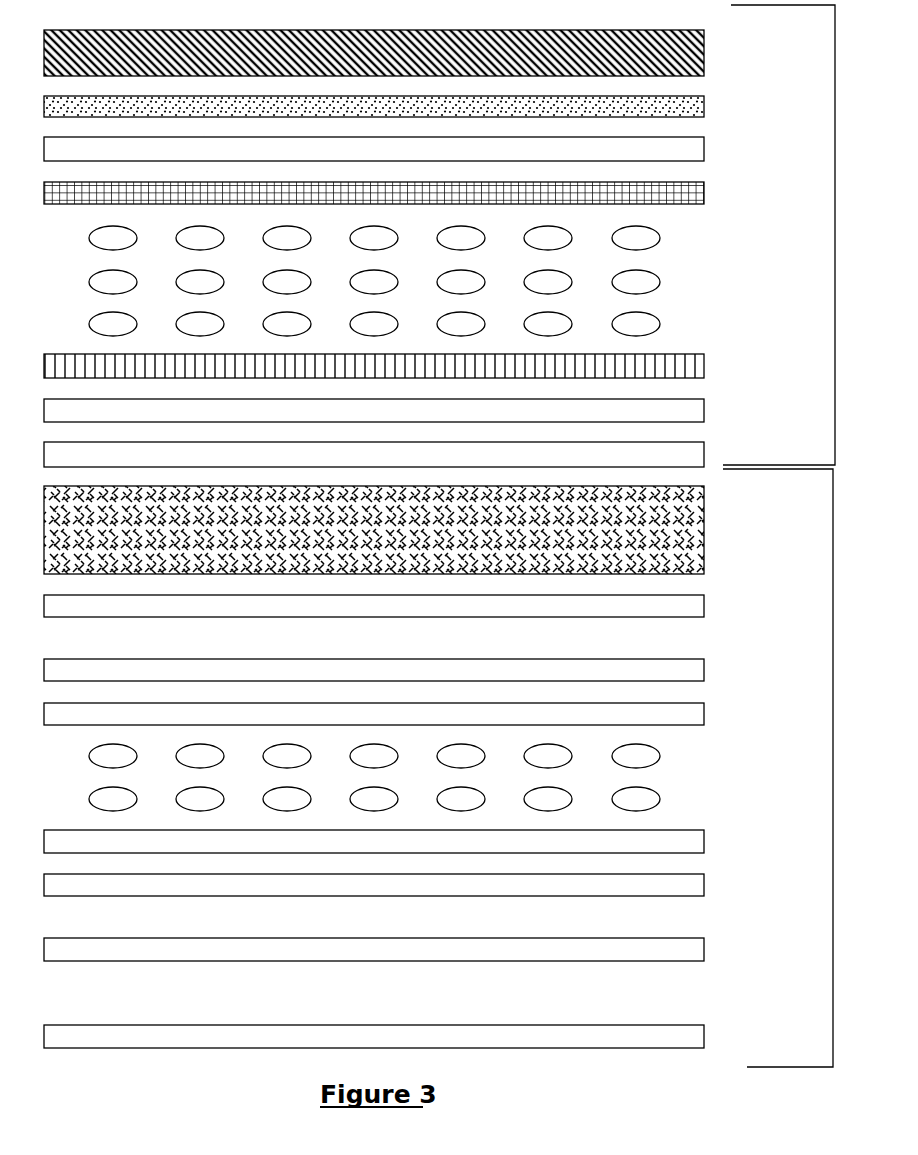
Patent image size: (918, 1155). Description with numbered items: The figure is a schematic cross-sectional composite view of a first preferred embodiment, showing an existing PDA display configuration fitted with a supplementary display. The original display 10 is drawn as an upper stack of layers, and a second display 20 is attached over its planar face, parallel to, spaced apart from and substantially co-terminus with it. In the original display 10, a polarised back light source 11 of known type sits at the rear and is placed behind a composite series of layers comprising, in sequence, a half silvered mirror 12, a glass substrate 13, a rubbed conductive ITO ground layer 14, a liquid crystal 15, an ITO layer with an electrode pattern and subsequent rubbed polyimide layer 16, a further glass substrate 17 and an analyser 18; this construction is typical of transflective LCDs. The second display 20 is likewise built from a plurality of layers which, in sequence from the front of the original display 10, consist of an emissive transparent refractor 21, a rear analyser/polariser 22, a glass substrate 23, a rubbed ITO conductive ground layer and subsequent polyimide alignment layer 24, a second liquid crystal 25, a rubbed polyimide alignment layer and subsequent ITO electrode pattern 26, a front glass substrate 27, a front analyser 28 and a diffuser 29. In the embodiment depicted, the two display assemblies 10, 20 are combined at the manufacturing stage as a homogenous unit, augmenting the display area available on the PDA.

The original display 10 is at (800, 235).
The polarised back light source 11 is at (424, 46).
The half silvered mirror 12 is at (416, 99).
The glass substrate 13 is at (420, 138).
The rubbed conductive ITO ground layer 14 is at (425, 186).
The liquid crystal 15 is at (449, 281).
The ITO layer with electrode pattern and rubbed polyimide layer 16 is at (420, 342).
The glass substrate 17 is at (426, 392).
The analyser 18 is at (426, 437).
The second display 20 is at (799, 768).
The emissive transparent refractor 21 is at (425, 523).
The rear analyser/polariser 22 is at (425, 588).
The glass substrate 23 is at (426, 663).
The rubbed ITO conductive ground layer and polyimide alignment layer 24 is at (422, 707).
The second liquid crystal 25 is at (427, 775).
The rubbed polyimide alignment layer and ITO electrode pattern 26 is at (416, 824).
The front glass substrate 27 is at (427, 878).
The front analyser 28 is at (427, 932).
The diffuser 29 is at (416, 1008).